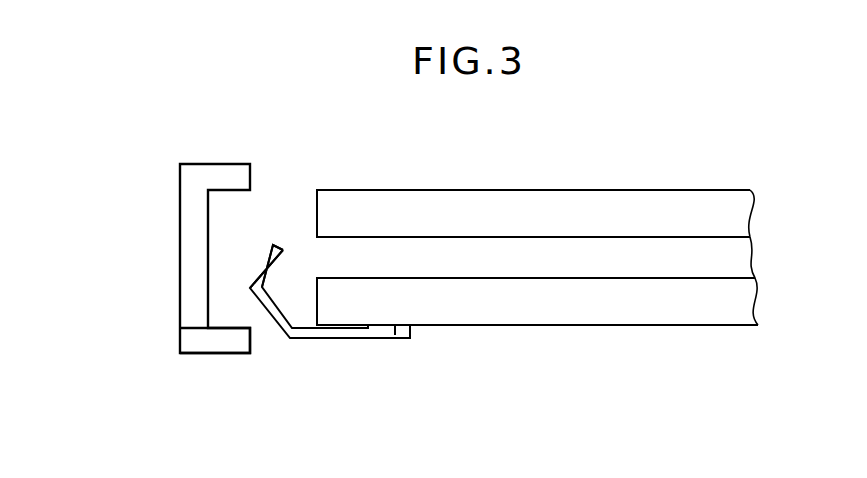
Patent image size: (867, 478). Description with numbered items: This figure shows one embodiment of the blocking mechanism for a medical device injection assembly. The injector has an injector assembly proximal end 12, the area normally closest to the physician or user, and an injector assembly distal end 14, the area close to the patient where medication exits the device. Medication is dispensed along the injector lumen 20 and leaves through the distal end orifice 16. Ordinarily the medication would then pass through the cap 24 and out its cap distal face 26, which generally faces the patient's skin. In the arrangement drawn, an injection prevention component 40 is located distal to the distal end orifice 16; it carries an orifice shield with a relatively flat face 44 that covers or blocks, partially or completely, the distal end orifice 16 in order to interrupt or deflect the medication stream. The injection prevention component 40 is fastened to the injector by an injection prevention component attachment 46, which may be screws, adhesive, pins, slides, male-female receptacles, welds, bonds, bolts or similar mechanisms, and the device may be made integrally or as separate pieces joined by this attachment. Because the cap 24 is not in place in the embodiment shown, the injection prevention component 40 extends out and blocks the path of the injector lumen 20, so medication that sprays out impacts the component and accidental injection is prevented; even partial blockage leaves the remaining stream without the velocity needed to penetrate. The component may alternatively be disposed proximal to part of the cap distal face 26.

The injector assembly proximal end 12 is at (267, 257).
The injector assembly distal end 14 is at (282, 372).
The distal end orifice 16 is at (318, 257).
The injector lumen 20 is at (677, 260).
The cap 24 is at (188, 180).
The cap distal face 26 is at (180, 308).
The injection prevention component 40 is at (322, 338).
The flat face 44 is at (276, 247).
The injection prevention component attachment 46 is at (395, 335).